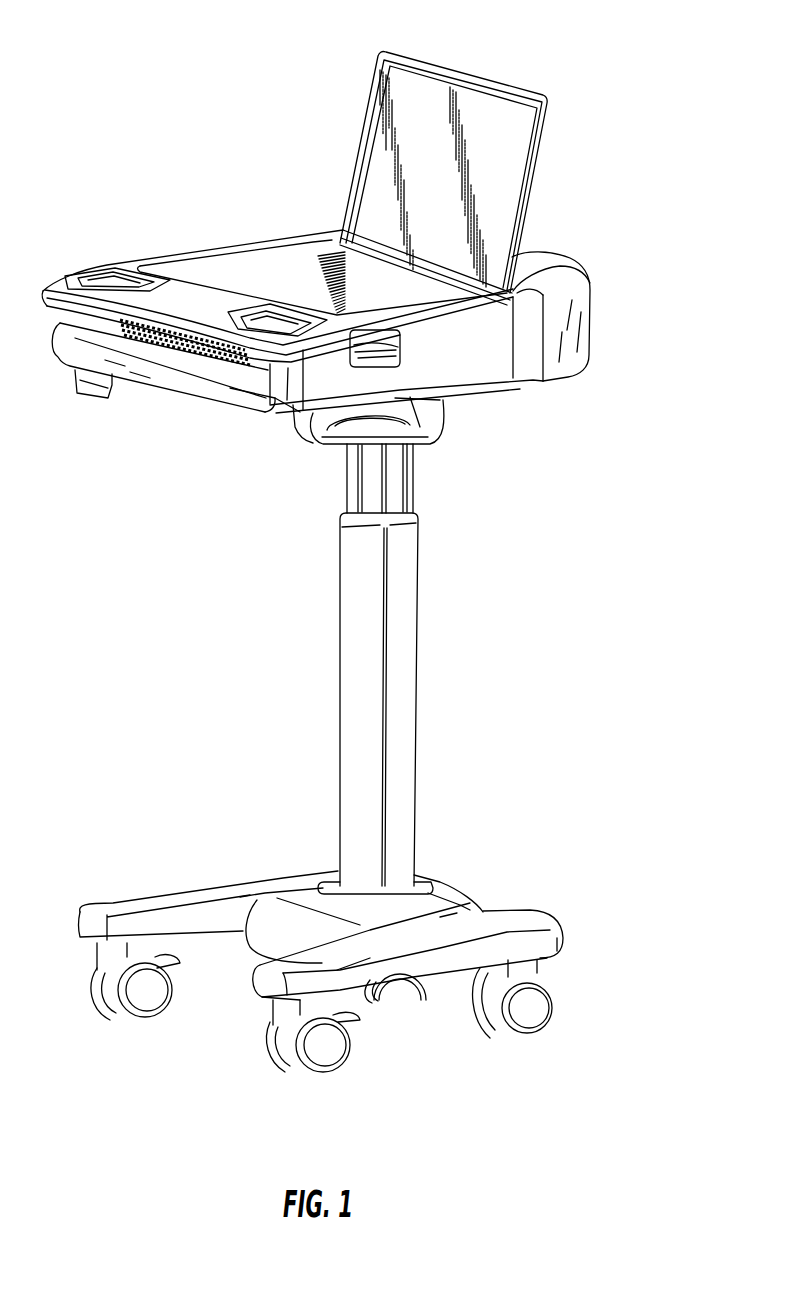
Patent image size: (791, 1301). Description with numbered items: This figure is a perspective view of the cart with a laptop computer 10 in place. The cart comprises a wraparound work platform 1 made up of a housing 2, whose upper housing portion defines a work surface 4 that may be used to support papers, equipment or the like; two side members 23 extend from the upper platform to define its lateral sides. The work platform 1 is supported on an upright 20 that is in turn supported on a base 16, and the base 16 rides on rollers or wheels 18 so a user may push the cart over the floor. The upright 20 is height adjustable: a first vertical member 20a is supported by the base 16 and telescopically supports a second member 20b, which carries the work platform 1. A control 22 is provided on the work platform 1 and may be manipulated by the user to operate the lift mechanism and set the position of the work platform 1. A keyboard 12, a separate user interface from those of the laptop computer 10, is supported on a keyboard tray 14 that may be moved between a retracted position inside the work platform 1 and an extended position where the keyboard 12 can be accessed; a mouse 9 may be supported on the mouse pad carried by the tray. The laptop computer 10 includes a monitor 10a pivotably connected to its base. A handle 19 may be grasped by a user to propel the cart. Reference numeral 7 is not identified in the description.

The wraparound work platform 1 is at (117, 245).
The housing 2 is at (183, 252).
The work surface 4 is at (257, 260).
The mounting bracket 7 is at (300, 443).
The mouse 9 is at (343, 420).
The laptop computer 10 is at (543, 137).
The monitor 10a is at (434, 114).
The keyboard 12 is at (228, 363).
The keyboard tray 14 is at (92, 342).
The base 16 is at (543, 918).
The wheels 18 is at (150, 1017).
The handle 19 is at (547, 267).
The upright 20 is at (409, 728).
The first vertical member 20a is at (392, 607).
The second member 20b is at (403, 477).
The control 22 is at (385, 358).
The side members 23 is at (513, 367).